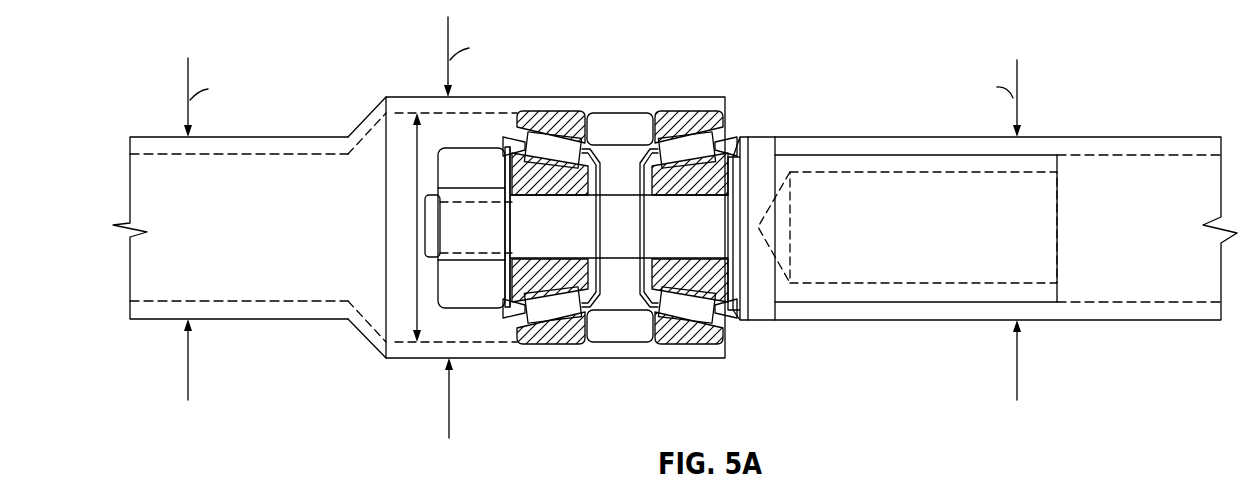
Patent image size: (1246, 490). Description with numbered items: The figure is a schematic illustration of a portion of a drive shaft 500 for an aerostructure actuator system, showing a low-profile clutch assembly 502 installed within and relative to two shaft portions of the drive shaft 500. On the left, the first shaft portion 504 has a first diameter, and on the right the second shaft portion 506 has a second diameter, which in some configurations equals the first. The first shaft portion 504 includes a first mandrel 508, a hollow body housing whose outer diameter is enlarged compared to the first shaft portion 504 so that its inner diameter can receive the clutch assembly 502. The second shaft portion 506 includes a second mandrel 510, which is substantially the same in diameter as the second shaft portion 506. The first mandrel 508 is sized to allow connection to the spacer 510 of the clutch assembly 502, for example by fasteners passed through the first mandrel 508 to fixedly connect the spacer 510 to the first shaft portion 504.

The drive shaft 500 is at (157, 58).
The clutch assembly 502 is at (746, 104).
The first shaft portion 504 is at (290, 137).
The second shaft portion 506 is at (1123, 137).
The first mandrel 508 is at (587, 97).
The second mandrel 510 is at (812, 321).